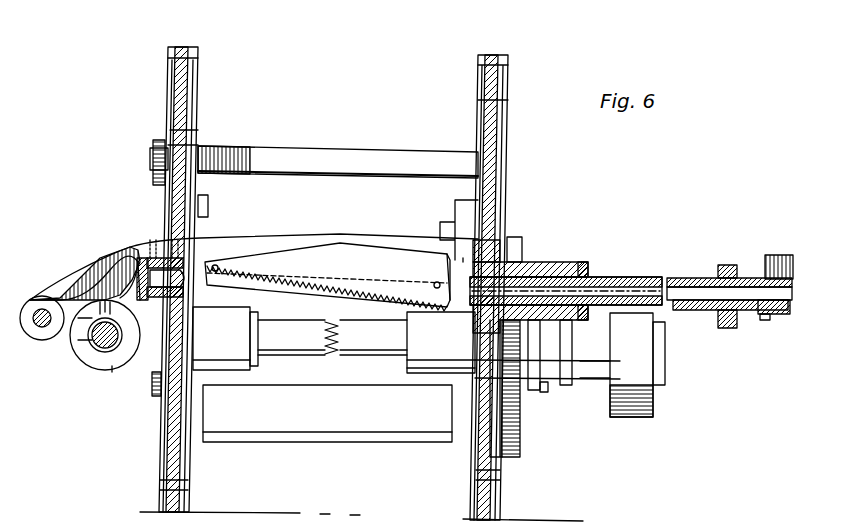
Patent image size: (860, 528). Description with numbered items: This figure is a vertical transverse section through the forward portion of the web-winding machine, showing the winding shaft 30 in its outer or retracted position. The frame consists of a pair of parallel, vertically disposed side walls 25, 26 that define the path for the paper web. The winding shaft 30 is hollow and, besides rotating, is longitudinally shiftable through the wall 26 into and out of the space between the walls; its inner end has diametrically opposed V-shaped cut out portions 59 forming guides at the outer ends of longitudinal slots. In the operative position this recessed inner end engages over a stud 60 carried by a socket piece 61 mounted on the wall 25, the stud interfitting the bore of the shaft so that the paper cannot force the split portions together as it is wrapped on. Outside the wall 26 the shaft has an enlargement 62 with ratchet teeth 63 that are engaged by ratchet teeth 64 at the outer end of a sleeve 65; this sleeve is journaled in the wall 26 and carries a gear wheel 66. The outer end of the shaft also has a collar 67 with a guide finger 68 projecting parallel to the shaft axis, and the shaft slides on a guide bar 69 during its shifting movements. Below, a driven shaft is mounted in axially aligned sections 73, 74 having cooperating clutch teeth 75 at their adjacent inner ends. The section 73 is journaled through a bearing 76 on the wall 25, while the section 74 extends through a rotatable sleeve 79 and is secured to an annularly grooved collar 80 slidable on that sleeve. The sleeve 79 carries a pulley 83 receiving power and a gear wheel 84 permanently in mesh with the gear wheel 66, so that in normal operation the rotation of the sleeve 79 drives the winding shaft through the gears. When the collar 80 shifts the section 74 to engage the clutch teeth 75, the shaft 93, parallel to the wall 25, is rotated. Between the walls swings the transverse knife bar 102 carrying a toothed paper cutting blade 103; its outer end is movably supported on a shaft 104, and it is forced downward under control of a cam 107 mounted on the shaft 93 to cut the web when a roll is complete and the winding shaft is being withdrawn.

The side wall 25 is at (168, 98).
The side wall 26 is at (505, 166).
The winding shaft 30 is at (634, 278).
The V-shaped cut out portions 59 is at (455, 282).
The stud 60 is at (205, 262).
The socket piece 61 is at (140, 262).
The enlargement 62 is at (737, 266).
The ratchet teeth 63 is at (720, 266).
The ratchet teeth 64 is at (594, 264).
The sleeve 65 is at (556, 264).
The gear wheel 66 is at (526, 262).
The collar 67 is at (778, 314).
The guide finger 68 is at (778, 255).
The guide bar 69 is at (724, 312).
The driven shaft section 73 is at (291, 337).
The driven shaft section 74 is at (373, 337).
The clutch teeth 75 is at (332, 357).
The bearing 76 is at (225, 338).
The rotatable sleeve 79 is at (441, 342).
The annularly grooved collar 80 is at (552, 392).
The pulley 83 is at (632, 418).
The gear wheel 84 is at (520, 440).
The shaft 93 is at (100, 340).
The knife bar 102 is at (327, 275).
The toothed paper cutting blade 103 is at (262, 283).
The shaft 104 is at (38, 322).
The cam 107 is at (112, 360).